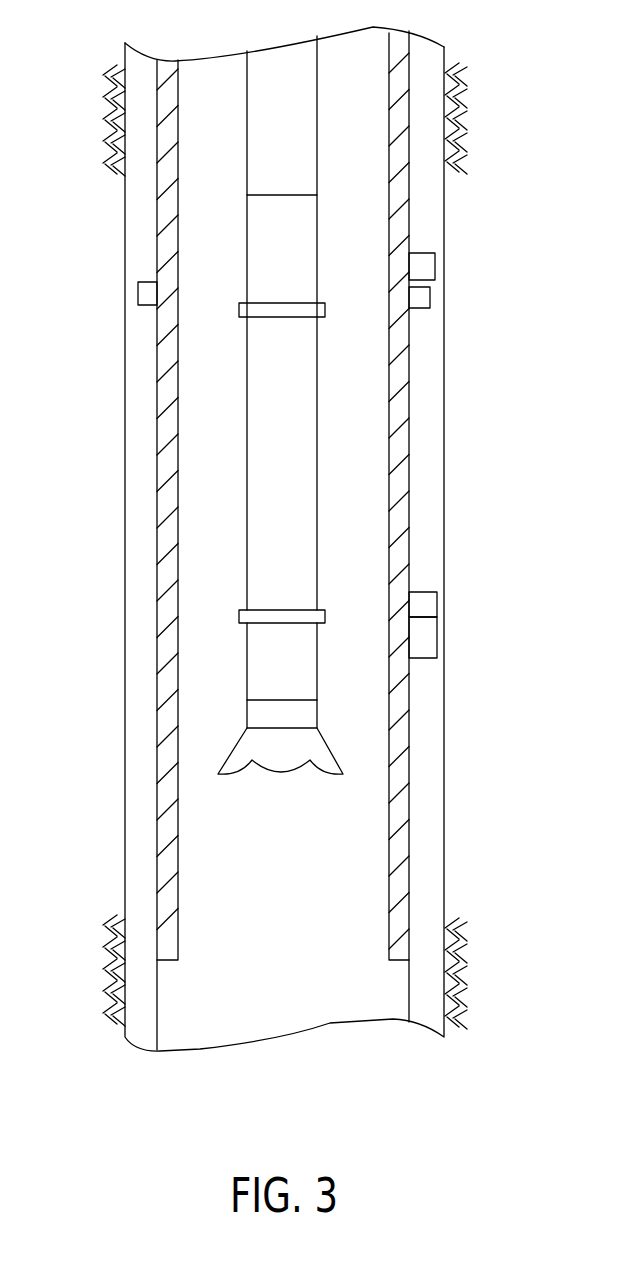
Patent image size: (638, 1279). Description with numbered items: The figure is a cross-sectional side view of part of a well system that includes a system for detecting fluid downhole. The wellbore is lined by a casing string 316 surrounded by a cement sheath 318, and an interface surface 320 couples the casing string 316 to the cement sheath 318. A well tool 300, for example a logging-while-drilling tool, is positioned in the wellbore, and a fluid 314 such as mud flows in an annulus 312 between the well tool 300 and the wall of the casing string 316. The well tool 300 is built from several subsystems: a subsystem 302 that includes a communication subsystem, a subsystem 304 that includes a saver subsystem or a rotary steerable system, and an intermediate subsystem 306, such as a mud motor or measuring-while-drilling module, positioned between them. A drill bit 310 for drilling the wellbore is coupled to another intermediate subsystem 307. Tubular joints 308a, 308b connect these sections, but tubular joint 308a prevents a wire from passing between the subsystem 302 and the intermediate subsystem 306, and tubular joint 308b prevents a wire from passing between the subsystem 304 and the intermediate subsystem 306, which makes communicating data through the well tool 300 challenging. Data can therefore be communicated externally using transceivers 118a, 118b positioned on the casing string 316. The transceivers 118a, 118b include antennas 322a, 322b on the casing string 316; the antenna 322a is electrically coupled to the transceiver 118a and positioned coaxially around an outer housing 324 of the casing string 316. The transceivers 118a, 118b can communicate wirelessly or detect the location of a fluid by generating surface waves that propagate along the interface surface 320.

The well tool 300 is at (267, 110).
The subsystem 302 is at (300, 220).
The subsystem 304 is at (310, 663).
The intermediate subsystem 306 is at (275, 395).
The intermediate subsystem 307 is at (310, 711).
The tubular joint 308a is at (240, 305).
The tubular joint 308b is at (238, 618).
The drill bit 310 is at (300, 773).
The annulus 312 is at (193, 218).
The fluid 314 is at (355, 850).
The casing string 316 is at (407, 390).
The cement sheath 318 is at (436, 518).
The interface surface 320 is at (411, 448).
The antenna 322a is at (148, 293).
The antenna 322b is at (432, 600).
The outer housing 324 is at (413, 343).
The transceiver 118a is at (427, 265).
The transceiver 118b is at (432, 638).